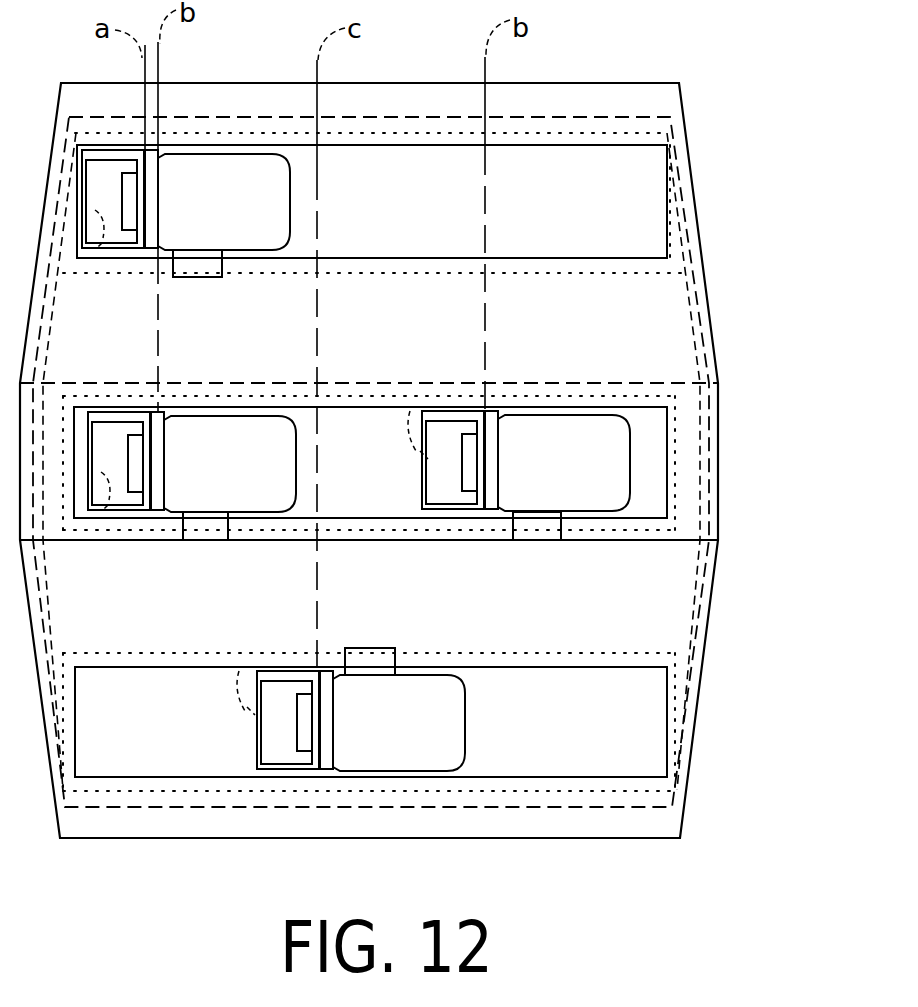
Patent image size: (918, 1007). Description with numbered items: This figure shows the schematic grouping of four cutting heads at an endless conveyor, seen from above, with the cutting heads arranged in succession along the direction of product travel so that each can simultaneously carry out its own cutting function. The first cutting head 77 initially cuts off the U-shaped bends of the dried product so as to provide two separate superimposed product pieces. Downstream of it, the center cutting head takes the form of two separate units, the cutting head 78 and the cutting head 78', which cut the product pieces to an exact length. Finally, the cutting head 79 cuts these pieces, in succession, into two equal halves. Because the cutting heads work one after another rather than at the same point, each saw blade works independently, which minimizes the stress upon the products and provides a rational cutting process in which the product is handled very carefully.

The cutting head 77 is at (255, 229).
The center cutting head 78 is at (192, 511).
The center cutting head 78' is at (610, 449).
The cutting head 79 is at (455, 726).